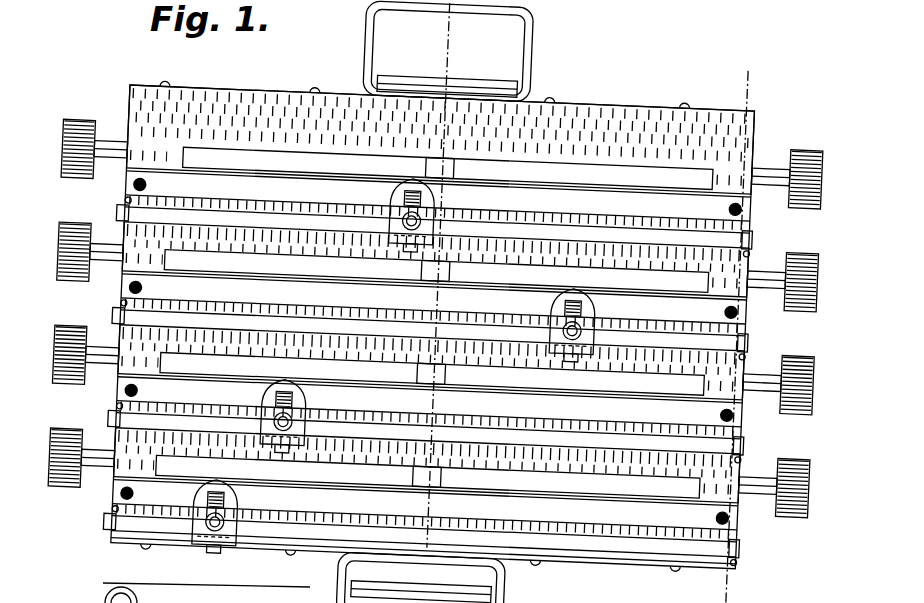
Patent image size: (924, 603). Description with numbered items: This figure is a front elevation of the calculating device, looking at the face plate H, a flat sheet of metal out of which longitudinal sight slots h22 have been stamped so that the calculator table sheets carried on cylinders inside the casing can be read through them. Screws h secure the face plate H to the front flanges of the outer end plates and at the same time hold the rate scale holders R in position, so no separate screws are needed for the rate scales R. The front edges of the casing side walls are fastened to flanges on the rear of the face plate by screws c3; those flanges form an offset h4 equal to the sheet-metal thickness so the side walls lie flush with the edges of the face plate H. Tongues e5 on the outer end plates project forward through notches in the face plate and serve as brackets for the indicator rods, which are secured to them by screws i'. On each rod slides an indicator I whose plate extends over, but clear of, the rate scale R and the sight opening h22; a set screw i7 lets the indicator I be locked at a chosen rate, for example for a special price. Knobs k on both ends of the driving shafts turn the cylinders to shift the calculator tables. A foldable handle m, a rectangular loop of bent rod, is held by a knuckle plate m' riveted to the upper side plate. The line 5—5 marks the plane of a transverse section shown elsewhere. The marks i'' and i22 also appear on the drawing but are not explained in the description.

The face plate H is at (150, 478).
The sight slot h22 is at (433, 310).
The central index box i22 is at (409, 322).
The rate scale holder R is at (455, 306).
The screw h is at (427, 356).
The screw i' is at (395, 377).
The left end clamp i'' is at (432, 376).
The offset h4 is at (783, 394).
The tongue e5 is at (427, 386).
The knob k is at (433, 318).
The indicator I is at (396, 365).
The set screw i7 is at (392, 417).
The foldable handle m is at (435, 302).
The knuckle plate m' is at (434, 330).
The screw c3 is at (425, 328).
The section line 5 is at (589, 303).